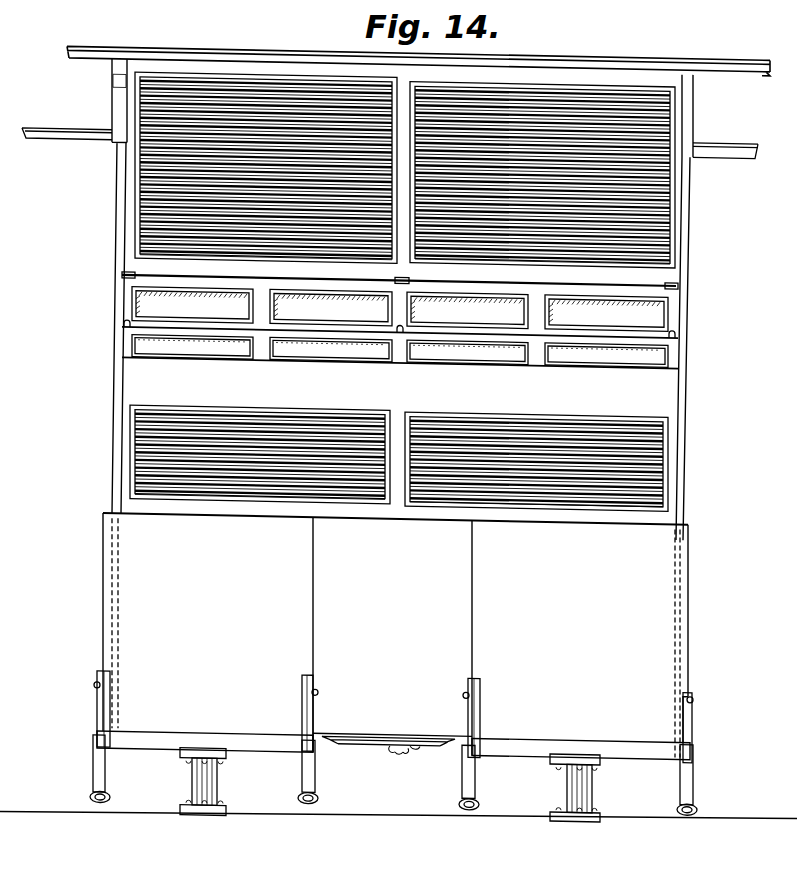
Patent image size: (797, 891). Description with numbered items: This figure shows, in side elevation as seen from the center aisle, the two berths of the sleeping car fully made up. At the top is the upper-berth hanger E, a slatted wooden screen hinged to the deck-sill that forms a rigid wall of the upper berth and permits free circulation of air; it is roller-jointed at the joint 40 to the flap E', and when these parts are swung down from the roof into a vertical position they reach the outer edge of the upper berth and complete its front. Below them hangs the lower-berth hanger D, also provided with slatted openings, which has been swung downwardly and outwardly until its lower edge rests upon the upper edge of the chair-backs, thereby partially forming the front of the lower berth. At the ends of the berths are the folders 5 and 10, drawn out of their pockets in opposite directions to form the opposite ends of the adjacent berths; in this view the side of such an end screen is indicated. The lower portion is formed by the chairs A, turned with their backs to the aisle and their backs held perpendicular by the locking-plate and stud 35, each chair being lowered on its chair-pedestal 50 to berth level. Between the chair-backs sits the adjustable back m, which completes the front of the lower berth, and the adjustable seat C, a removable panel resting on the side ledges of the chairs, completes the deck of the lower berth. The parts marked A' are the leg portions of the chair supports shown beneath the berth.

The folder 5 is at (112, 242).
The folder 10 is at (686, 270).
The joint 40 is at (133, 271).
The upper-berth hanger E is at (405, 170).
The flap E' is at (400, 309).
The lower-berth hanger D is at (399, 449).
The chair A is at (393, 636).
The adjustable back m is at (392, 676).
The adjustable seat C is at (443, 738).
The locking-plate and stud 35 is at (96, 701).
The supporting legs with casters A' is at (393, 774).
The chair-pedestal 50 is at (217, 772).